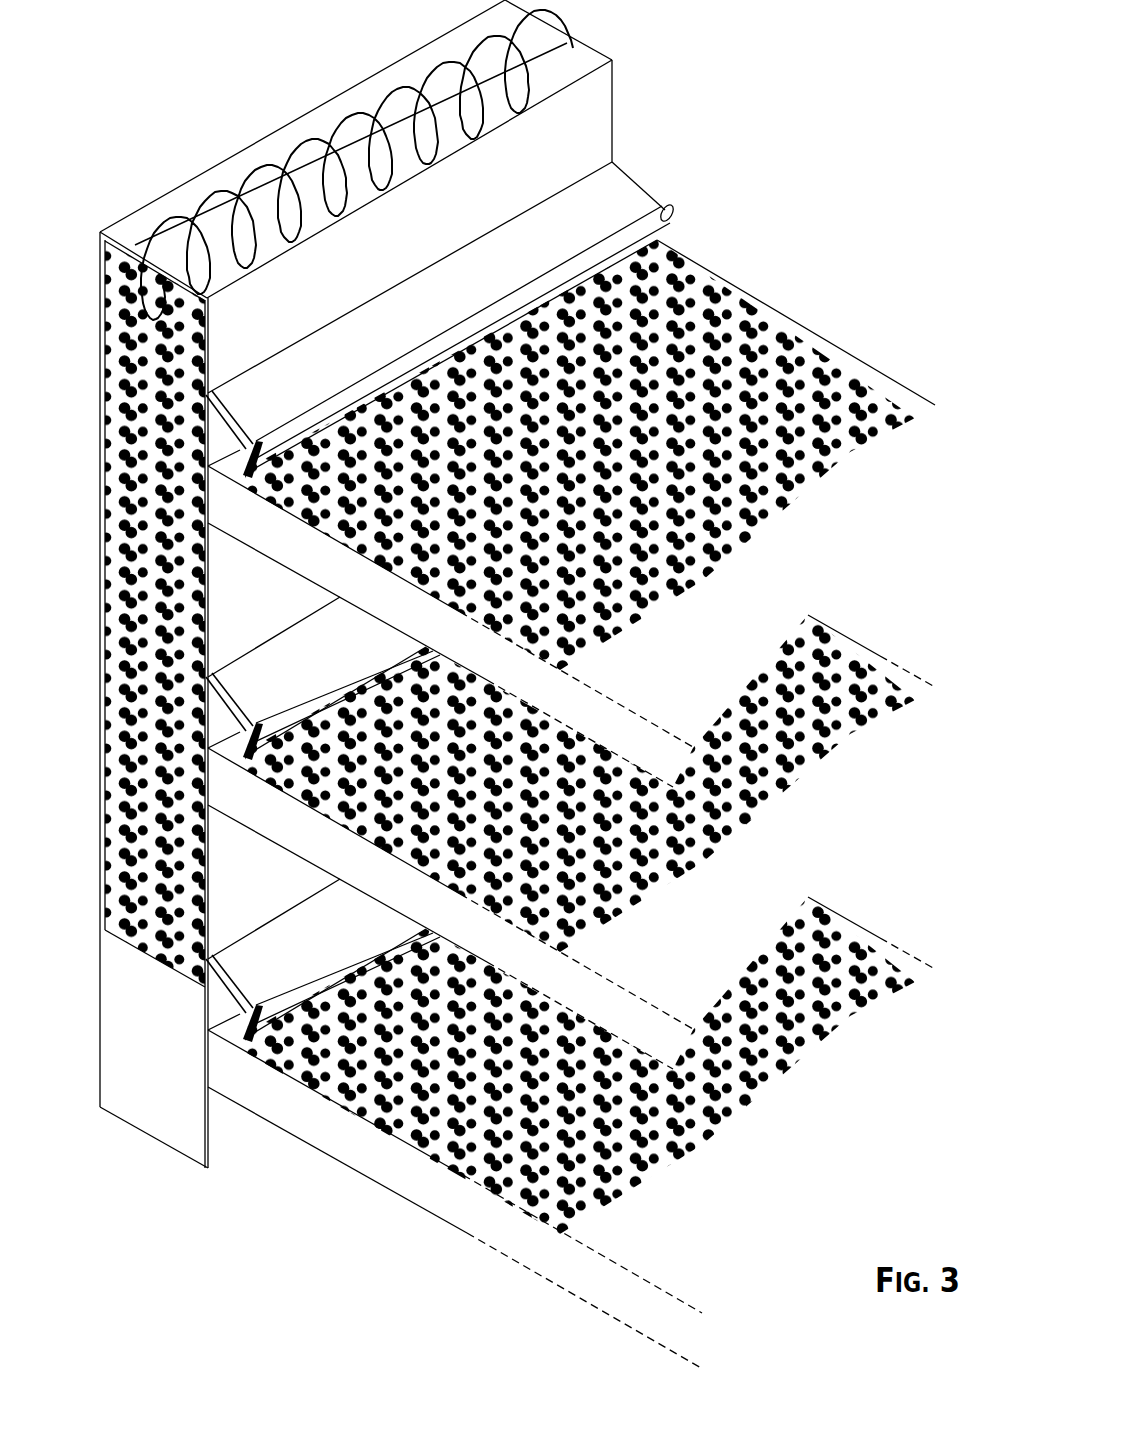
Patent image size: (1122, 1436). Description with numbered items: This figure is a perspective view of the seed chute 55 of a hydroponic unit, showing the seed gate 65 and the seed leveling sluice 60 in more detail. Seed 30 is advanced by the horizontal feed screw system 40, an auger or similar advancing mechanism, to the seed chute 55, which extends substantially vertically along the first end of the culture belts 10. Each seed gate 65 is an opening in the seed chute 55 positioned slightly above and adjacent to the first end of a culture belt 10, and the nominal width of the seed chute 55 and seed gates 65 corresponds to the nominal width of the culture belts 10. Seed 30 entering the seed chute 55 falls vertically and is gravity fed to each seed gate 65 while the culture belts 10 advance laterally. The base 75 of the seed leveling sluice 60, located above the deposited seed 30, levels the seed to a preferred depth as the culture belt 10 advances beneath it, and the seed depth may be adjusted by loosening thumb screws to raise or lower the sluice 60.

The culture belt 10 is at (270, 803).
The seed 30 is at (355, 517).
The horizontal feed screw system 40 is at (321, 144).
The seed chute 55 is at (140, 453).
The seed leveling sluice 60 is at (632, 207).
The seed gate 65 is at (674, 200).
The base of leveling sluice 75 is at (272, 747).